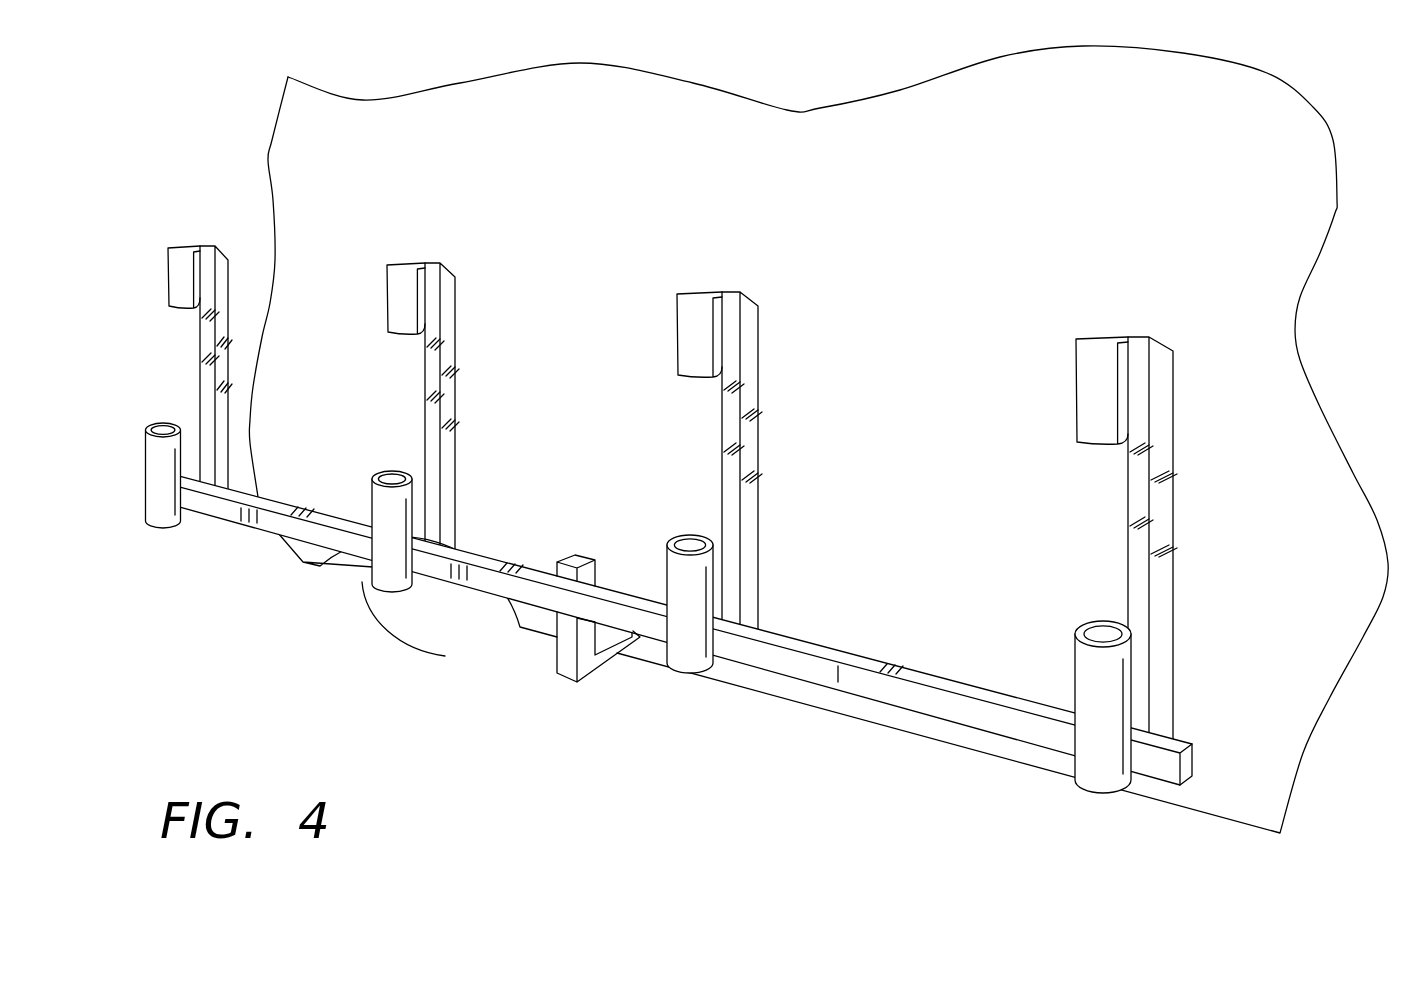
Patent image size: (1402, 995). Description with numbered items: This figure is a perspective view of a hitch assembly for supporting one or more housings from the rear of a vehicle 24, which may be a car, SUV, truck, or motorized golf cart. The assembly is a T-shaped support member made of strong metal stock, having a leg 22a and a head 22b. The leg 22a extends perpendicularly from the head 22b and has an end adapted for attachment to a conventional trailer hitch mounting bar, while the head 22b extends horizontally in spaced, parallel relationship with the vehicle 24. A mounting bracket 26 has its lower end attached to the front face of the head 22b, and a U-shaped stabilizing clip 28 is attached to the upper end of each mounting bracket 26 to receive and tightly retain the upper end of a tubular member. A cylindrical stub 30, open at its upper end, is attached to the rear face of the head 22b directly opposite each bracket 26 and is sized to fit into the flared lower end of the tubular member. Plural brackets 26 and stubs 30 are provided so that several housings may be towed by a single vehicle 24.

The leg 22a is at (610, 663).
The head 22b is at (905, 708).
The vehicle 24 is at (906, 226).
The mounting bracket 26 is at (457, 327).
The U-shaped stabilizing clip 28 is at (170, 245).
The cylindrical stub 30 is at (160, 527).